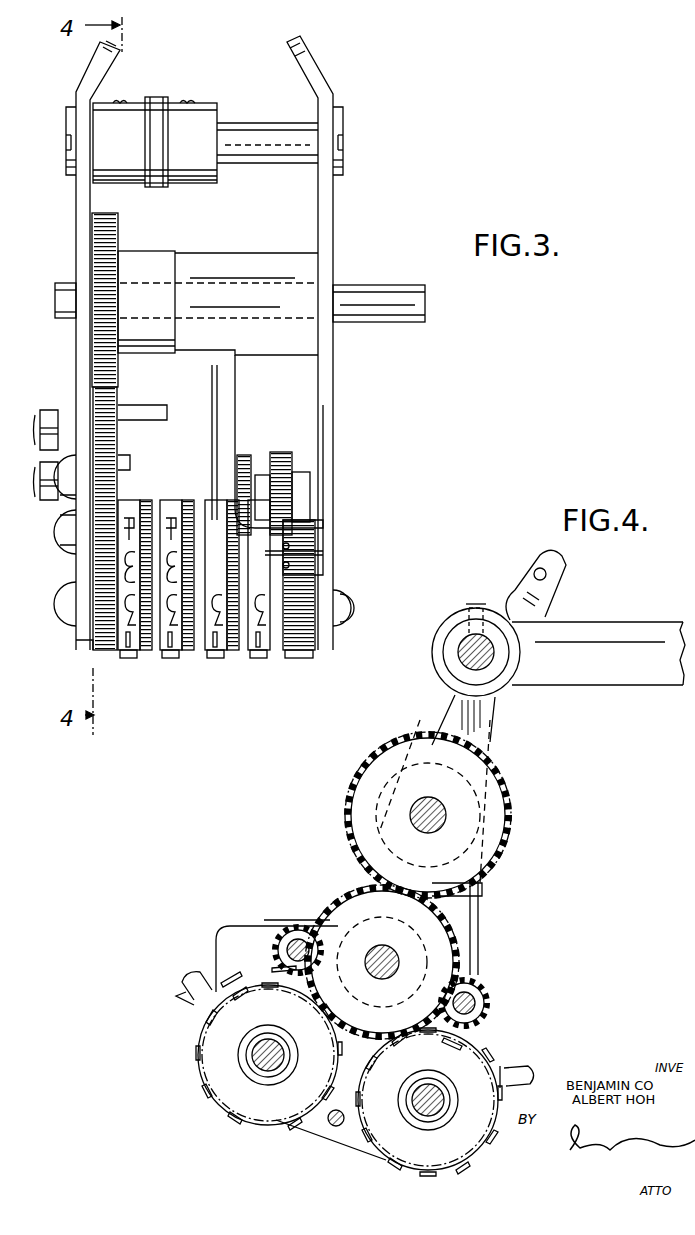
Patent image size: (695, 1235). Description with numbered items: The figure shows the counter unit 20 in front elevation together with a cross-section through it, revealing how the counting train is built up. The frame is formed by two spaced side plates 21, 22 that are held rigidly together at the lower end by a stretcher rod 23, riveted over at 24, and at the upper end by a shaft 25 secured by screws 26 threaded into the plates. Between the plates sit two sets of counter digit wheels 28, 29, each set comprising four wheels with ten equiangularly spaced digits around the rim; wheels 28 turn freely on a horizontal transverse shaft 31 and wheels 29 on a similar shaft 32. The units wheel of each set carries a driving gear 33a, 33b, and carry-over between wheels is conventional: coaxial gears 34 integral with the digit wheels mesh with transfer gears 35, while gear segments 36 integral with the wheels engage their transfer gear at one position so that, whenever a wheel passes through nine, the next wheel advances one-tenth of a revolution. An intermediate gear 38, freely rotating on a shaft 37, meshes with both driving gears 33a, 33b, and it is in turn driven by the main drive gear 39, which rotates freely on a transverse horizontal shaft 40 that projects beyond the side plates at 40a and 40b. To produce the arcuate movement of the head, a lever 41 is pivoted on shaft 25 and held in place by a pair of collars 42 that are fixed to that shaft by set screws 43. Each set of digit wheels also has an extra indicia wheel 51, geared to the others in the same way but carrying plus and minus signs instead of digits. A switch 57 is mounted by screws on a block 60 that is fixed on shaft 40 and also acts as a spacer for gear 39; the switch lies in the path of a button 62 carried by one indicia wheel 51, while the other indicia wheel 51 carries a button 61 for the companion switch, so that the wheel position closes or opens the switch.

In FIG. 3, the counter unit 20 is at (352, 466).
In FIG. 3, the side plate 21 is at (76, 207).
In FIG. 3, the side plate 22 is at (360, 224).
In FIG. 4, the side plate 22 is at (250, 917).
In FIG. 4, the stretcher rod 23 is at (330, 1128).
In FIG. 3, the riveted-over end 24 is at (60, 603).
In FIG. 3, the shaft 25 is at (280, 110).
In FIG. 4, the shaft 25 is at (462, 658).
In FIG. 3, the screw 26 is at (66, 118).
In FIG. 4, the counter digit wheels 28 is at (203, 1078).
In FIG. 3, the counter digit wheels 29 is at (142, 655).
In FIG. 4, the counter digit wheels 29 is at (494, 1143).
In FIG. 4, the shaft 31 is at (280, 1070).
In FIG. 4, the shaft 32 is at (445, 1118).
In FIG. 4, the driving gear 33a is at (284, 988).
In FIG. 3, the driving gear 33b is at (93, 648).
In FIG. 4, the driving gear 33b is at (470, 1046).
In FIG. 3, the coaxial gear 34 is at (252, 655).
In FIG. 3, the transfer gear 35 is at (244, 455).
In FIG. 4, the transfer gear 35 is at (292, 930).
In FIG. 3, the gear segment 36 is at (190, 655).
In FIG. 3, the shaft 37 is at (296, 440).
In FIG. 4, the shaft 37 is at (390, 952).
In FIG. 3, the intermediate gear 38 is at (118, 405).
In FIG. 4, the intermediate gear 38 is at (375, 890).
In FIG. 3, the drive gear 39 is at (118, 218).
In FIG. 4, the drive gear 39 is at (486, 745).
In FIG. 3, the shaft 40 is at (362, 270).
In FIG. 4, the shaft 40 is at (436, 797).
In FIG. 3, the shaft extension 40a is at (64, 319).
In FIG. 3, the shaft extension 40b is at (404, 322).
In FIG. 3, the lever 41 is at (156, 187).
In FIG. 4, the lever 41 is at (637, 616).
In FIG. 3, the collar 42 is at (140, 183).
In FIG. 4, the collar 42 is at (448, 640).
In FIG. 3, the set screw 43 is at (186, 100).
In FIG. 4, the set screw 43 is at (476, 606).
In FIG. 3, the indicia wheel 51 is at (316, 652).
In FIG. 3, the switch 57 is at (316, 546).
In FIG. 4, the switch 57 is at (478, 930).
In FIG. 3, the block 60 is at (258, 247).
In FIG. 4, the button 61 is at (196, 988).
In FIG. 4, the button 62 is at (524, 1070).